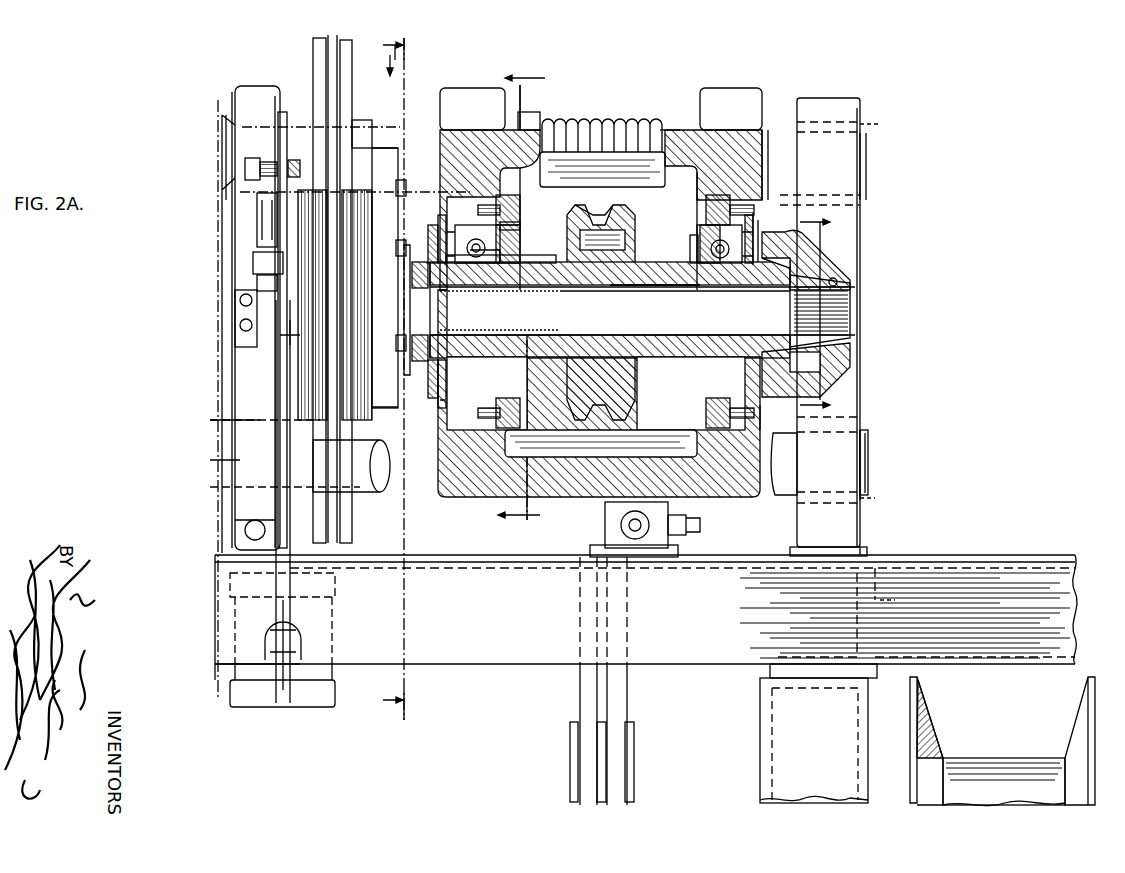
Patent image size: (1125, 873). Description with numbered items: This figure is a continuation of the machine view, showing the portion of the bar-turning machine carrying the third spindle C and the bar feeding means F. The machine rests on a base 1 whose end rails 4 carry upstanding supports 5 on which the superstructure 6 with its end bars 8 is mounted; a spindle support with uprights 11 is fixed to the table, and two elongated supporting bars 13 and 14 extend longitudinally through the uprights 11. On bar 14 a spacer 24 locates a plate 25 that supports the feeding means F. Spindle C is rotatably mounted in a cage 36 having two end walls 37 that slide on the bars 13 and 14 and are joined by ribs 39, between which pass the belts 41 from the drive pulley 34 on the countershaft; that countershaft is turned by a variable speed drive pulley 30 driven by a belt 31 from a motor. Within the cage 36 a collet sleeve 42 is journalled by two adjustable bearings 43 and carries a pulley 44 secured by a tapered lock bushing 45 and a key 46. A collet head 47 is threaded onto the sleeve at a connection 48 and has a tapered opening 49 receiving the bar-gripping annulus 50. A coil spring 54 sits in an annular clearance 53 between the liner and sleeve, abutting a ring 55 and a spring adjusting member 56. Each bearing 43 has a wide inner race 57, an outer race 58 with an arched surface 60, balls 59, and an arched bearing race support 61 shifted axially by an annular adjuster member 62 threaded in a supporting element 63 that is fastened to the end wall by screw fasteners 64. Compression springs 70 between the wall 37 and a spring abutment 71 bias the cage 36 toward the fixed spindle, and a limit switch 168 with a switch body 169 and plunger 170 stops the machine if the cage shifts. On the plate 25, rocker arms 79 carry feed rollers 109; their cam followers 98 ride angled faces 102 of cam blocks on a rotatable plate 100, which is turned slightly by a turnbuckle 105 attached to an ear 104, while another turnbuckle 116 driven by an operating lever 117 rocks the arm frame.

The base 1 is at (1011, 574).
The end rails 4 is at (521, 297).
The upstanding supports 5 is at (760, 718).
The superstructure 6 is at (878, 553).
The end bars 8 is at (895, 605).
The upstanding supports or standards 11 is at (404, 64).
The supporting bar member 13 is at (222, 178).
The supporting bar member 14 is at (880, 430).
The spacer 24 is at (217, 417).
The plate 25 is at (236, 90).
The variable speed drive pulley 30 is at (932, 735).
The belt 31 is at (1000, 762).
The drive pulley 34 is at (636, 748).
The cage or spindle support 36 is at (770, 114).
The end walls 37 is at (467, 92).
The ribs 39 is at (622, 150).
The belts 41 is at (590, 690).
The collet sleeve 42 is at (535, 265).
The adjustable bearings 43 is at (438, 235).
The pulley 44 is at (625, 212).
The tapered lock bushing 45 is at (596, 285).
The key 46 is at (645, 285).
The collet head 47 is at (820, 268).
The threaded connection 48 is at (805, 250).
The axially tapered opening 49 is at (838, 280).
The annulus 50 is at (852, 306).
The annular clearance 53 is at (548, 262).
The coil spring 54 is at (494, 262).
The ring 55 is at (522, 284).
The spring adjusting member 56 is at (416, 308).
The inner race 57 is at (462, 262).
The outer race 58 is at (478, 258).
The balls 59 is at (470, 262).
The exterior annular surface 60 is at (447, 425).
The bearing race support 61 is at (432, 225).
The annular adjuster member 62 is at (522, 235).
The annular supporting element 63 is at (510, 222).
The screw fasteners 64 is at (496, 205).
The coiled compression springs 70 is at (674, 128).
The spring abutment 71 is at (532, 118).
The rocker arm 79 is at (354, 120).
The foot or cam follower 98 is at (290, 333).
The rotatable plate 100 is at (284, 113).
The angularly disposed face 102 is at (235, 313).
The ear 104 is at (252, 158).
The adjustable turnbuckle 105 is at (260, 205).
The feed roller 109 is at (365, 197).
The adjustable turnbuckle 116 is at (315, 455).
The operating lever 117 is at (278, 612).
The limit switch 168 is at (655, 545).
The switch body 169 is at (636, 550).
The plunger 170 is at (700, 525).
The third spindle C is at (607, 165).
The bar feeding means F is at (358, 158).